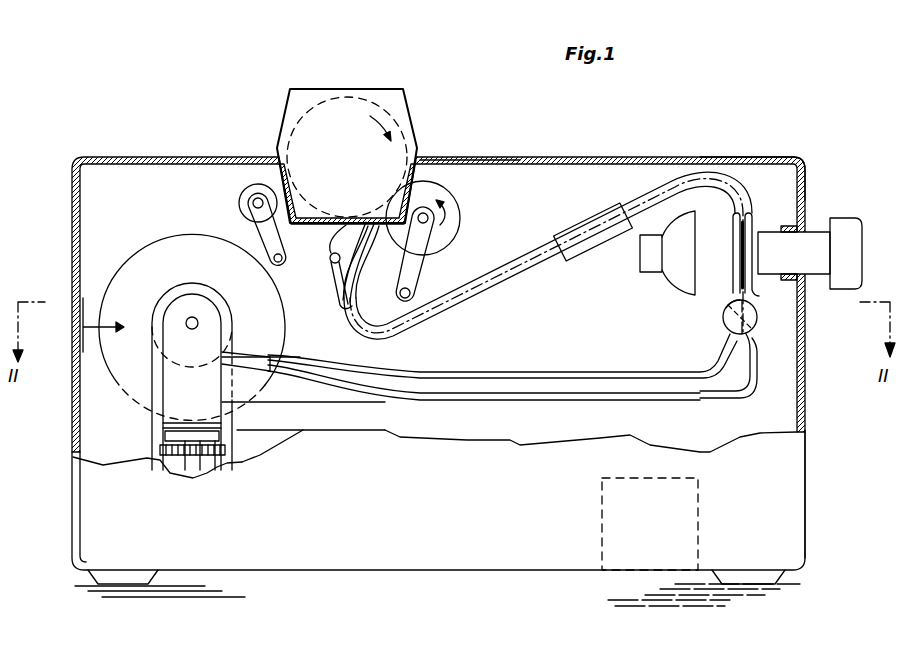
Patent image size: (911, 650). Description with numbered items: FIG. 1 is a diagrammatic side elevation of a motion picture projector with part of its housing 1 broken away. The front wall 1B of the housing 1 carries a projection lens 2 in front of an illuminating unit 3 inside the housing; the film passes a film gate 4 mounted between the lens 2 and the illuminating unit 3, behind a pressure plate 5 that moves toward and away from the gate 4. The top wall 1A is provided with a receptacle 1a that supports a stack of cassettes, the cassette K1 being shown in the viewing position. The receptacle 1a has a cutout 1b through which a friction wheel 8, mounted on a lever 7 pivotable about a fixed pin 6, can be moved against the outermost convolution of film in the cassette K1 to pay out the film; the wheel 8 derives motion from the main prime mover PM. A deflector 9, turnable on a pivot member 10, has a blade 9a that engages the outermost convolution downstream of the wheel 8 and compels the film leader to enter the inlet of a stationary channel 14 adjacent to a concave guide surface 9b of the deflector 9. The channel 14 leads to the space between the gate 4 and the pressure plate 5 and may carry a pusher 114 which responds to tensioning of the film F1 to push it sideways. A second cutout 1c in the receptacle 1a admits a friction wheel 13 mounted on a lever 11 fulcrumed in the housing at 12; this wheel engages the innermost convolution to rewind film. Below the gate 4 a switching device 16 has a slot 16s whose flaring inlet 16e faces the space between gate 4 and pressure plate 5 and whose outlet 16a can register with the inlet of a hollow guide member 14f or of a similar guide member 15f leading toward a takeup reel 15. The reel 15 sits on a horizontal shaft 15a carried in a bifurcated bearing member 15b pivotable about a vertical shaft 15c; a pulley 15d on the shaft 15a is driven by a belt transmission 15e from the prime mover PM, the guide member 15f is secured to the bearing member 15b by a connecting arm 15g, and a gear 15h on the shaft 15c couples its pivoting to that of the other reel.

The housing 1 is at (419, 574).
The top wall 1A is at (790, 156).
The front wall 1B is at (805, 396).
The receptacle 1a is at (430, 166).
The cutout 1b is at (412, 190).
The second cutout 1c is at (288, 190).
The cassette K1 is at (397, 100).
The projection lens 2 is at (843, 218).
The illuminating unit 3 is at (672, 284).
The film gate 4 is at (733, 286).
The pressure plate 5 is at (755, 290).
The fixed pin 6 is at (415, 293).
The lever 7 is at (403, 272).
The friction wheel 8 is at (452, 217).
The deflector 9 is at (342, 300).
The blade 9a is at (368, 222).
The concave guide surface 9b is at (366, 292).
The pivot member 10 is at (330, 265).
The lever 11 is at (262, 232).
The fulcrum 12 is at (283, 258).
The friction wheel 13 is at (247, 200).
The stationary channel 14 is at (548, 256).
The guide member 14f is at (573, 375).
The film F1 is at (500, 262).
The pusher 114 is at (585, 222).
The takeup reel 15 is at (125, 385).
The horizontal shaft 15a is at (192, 317).
The bifurcated bearing member 15b is at (167, 366).
The vertical shaft 15c is at (195, 472).
The pulley 15d is at (160, 303).
The belt transmission 15e is at (247, 432).
The guide member 15f is at (385, 403).
The connecting arm 15g is at (308, 402).
The gear 15h is at (222, 462).
The switching device 16 is at (752, 325).
The outlet 16a is at (735, 332).
The inlet 16e is at (728, 305).
The slot 16s is at (750, 342).
The prime mover PM is at (700, 522).